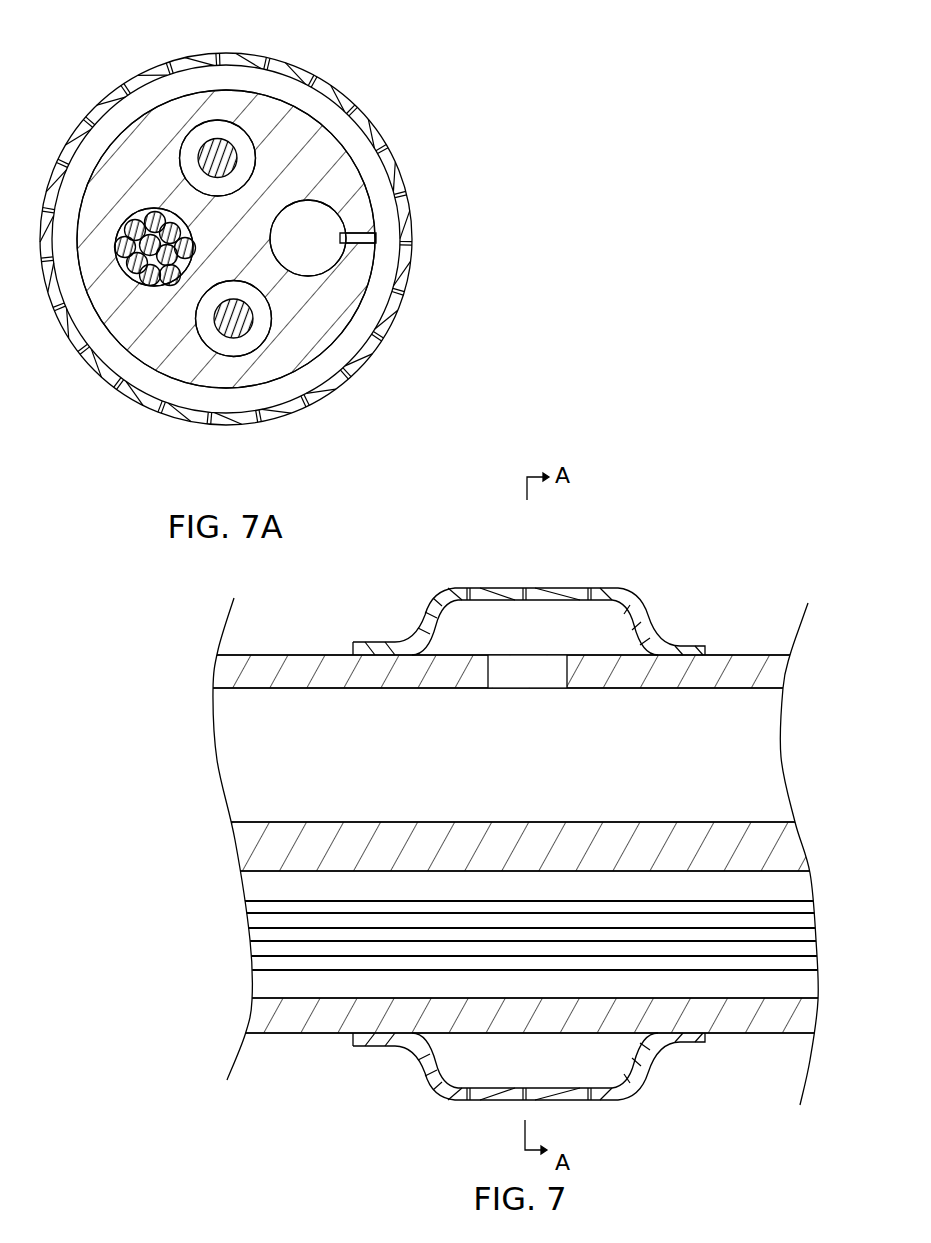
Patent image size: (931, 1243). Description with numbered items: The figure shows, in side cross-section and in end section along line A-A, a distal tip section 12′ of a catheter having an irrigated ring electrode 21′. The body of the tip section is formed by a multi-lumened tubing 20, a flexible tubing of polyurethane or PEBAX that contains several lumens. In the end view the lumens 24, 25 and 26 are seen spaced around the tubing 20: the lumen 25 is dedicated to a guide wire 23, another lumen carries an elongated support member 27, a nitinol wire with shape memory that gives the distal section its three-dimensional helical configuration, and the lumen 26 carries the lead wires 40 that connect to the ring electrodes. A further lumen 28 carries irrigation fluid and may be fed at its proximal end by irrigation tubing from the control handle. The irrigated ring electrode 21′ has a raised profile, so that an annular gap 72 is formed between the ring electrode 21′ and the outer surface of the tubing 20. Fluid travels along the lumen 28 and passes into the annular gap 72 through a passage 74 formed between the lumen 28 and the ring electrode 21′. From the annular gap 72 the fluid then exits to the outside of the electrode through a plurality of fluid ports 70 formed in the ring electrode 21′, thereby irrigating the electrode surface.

In FIG. 7A, the cable assembly 12′ is at (397, 93).
In FIG. 7A, the multi-lumened tubing 20 is at (226, 239).
In FIG. 7, the multi-lumened tubing 20 is at (303, 662).
In FIG. 7A, the irrigated ring electrode 21′ is at (143, 66).
In FIG. 7, the irrigated ring electrode 21′ is at (553, 588).
In FIG. 7A, the guide wire 23 is at (225, 332).
In FIG. 7A, the lumen 24 is at (220, 143).
In FIG. 7A, the lumen 25 is at (237, 362).
In FIG. 7A, the lumen 26 is at (127, 224).
In FIG. 7, the lumen 26 is at (832, 873).
In FIG. 7A, the elongated support member 27 is at (203, 123).
In FIG. 7A, the lumen 28 is at (330, 203).
In FIG. 7, the lumen 28 is at (790, 688).
In FIG. 7A, the lead wires 40 is at (121, 248).
In FIG. 7, the lead wires 40 is at (277, 943).
In FIG. 7A, the fluid ports 70 is at (350, 374).
In FIG. 7, the fluid ports 70 is at (428, 600).
In FIG. 7A, the annular gap 72 is at (372, 318).
In FIG. 7, the annular gap 72 is at (585, 613).
In FIG. 7A, the passage 74 is at (365, 233).
In FIG. 7, the passage 74 is at (490, 655).